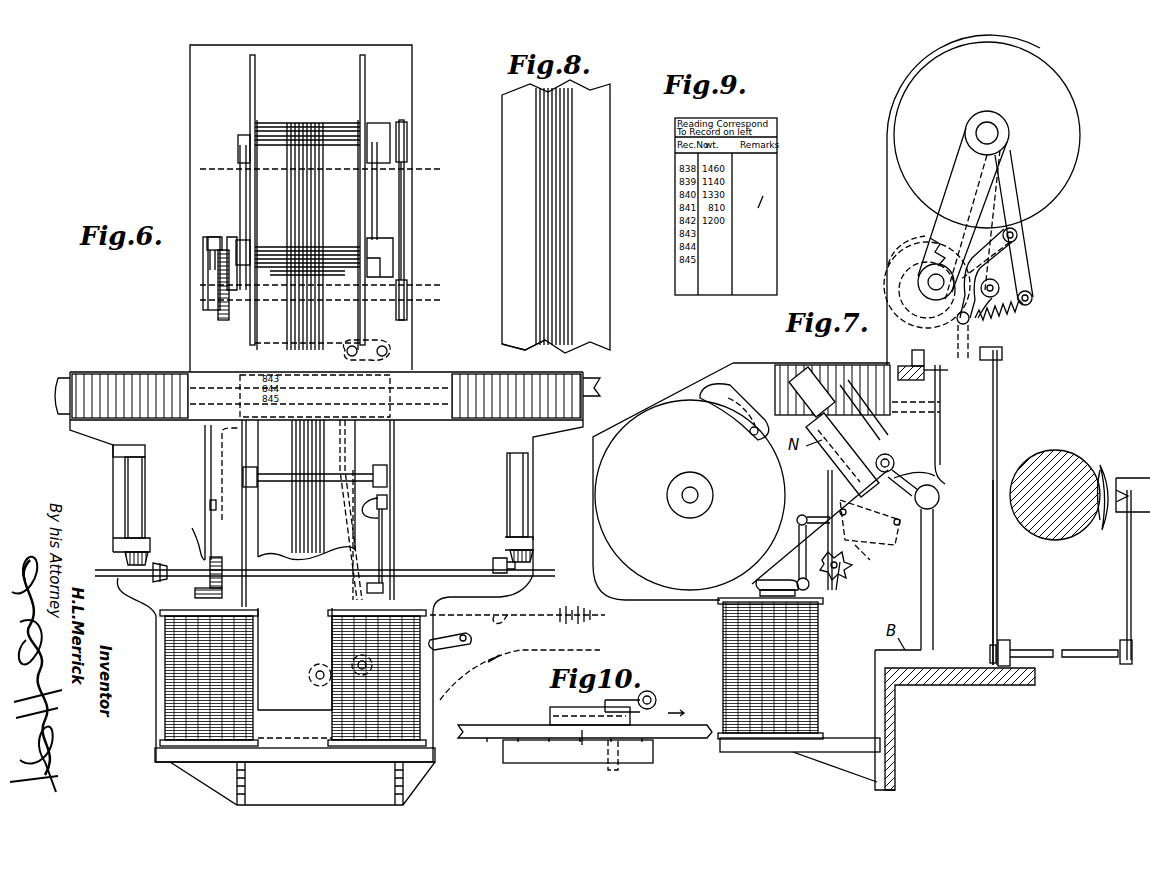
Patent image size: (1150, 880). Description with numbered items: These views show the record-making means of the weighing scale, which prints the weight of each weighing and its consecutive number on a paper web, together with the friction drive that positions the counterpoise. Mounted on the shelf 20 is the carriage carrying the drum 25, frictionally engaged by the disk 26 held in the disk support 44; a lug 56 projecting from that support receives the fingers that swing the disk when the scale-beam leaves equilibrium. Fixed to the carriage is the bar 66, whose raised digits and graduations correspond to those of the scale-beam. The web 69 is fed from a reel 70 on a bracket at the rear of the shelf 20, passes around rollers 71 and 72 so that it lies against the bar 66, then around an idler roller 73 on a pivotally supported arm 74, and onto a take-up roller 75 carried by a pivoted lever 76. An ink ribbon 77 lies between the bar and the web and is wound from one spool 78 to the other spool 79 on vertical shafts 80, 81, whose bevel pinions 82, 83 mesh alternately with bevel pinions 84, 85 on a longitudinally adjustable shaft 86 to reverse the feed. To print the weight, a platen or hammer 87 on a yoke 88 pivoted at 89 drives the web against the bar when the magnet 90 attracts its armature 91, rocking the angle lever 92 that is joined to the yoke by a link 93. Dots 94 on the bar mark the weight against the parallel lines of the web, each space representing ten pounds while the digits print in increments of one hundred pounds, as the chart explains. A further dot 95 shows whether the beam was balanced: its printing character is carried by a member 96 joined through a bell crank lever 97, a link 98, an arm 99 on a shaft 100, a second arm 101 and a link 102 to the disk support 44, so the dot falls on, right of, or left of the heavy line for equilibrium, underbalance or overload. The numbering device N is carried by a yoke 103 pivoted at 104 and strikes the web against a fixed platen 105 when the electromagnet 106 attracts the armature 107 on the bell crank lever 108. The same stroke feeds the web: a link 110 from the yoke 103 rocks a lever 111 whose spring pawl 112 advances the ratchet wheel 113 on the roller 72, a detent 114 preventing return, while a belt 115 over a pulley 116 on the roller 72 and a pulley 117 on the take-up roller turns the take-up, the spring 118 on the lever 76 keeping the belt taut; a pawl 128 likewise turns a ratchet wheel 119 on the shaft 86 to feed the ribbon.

In FIG. 7, the shelf 20 is at (935, 686).
In FIG. 7, the drum 25 is at (1040, 532).
In FIG. 7, the disk 26 is at (1100, 520).
In FIG. 7, the disk support 44 is at (1128, 478).
In FIG. 7, the lug 56 is at (1104, 472).
In FIG. 7, the bar 66 is at (885, 370).
In FIG. 10, the bar 66 is at (480, 738).
In FIG. 7, the web 69 is at (790, 540).
In FIG. 7, the reel 70 is at (690, 495).
In FIG. 7, the roller 71 is at (895, 463).
In FIG. 7, the roller 72 is at (893, 266).
In FIG. 7, the idler roller 73 is at (1000, 288).
In FIG. 7, the pivotally supported arm 74 is at (1010, 305).
In FIG. 7, the take-up roller 75 is at (987, 135).
In FIG. 6, the pivoted lever 76 is at (240, 186).
In FIG. 7, the pivoted lever 76 is at (1022, 258).
In FIG. 6, the ink ribbon 77 is at (425, 385).
In FIG. 6, the spool 78 is at (112, 374).
In FIG. 6, the spool 79 is at (555, 378).
In FIG. 8, the spool 79 is at (537, 353).
In FIG. 6, the shaft 80 is at (145, 490).
In FIG. 6, the shaft 81 is at (507, 480).
In FIG. 6, the bevel pinion 82 is at (148, 562).
In FIG. 6, the bevel pinion 83 is at (512, 552).
In FIG. 6, the bevel pinion 84 is at (165, 572).
In FIG. 6, the bevel pinion 85 is at (493, 565).
In FIG. 6, the longitudinally adjustable shaft 86 is at (418, 570).
In FIG. 7, the platen 87 is at (806, 378).
In FIG. 6, the yoke 88 is at (387, 456).
In FIG. 7, the yoke 88 is at (840, 468).
In FIG. 6, the pivotal support 89 is at (387, 500).
In FIG. 7, the pivotal support 89 is at (850, 566).
In FIG. 6, the magnet 90 is at (410, 688).
In FIG. 7, the magnet 90 is at (812, 672).
In FIG. 7, the armature 91 is at (766, 580).
In FIG. 7, the angle lever 92 is at (798, 566).
In FIG. 7, the link 93 is at (824, 518).
In FIG. 10, the dots 94 is at (516, 750).
In FIG. 8, the dot 95 is at (560, 162).
In FIG. 10, the dot 95 is at (568, 745).
In FIG. 7, the member 96 is at (918, 350).
In FIG. 10, the member 96 is at (578, 712).
In FIG. 7, the bell crank lever 97 is at (933, 378).
In FIG. 10, the bell crank lever 97 is at (650, 694).
In FIG. 6, the link 98 is at (352, 560).
In FIG. 7, the link 98 is at (990, 590).
In FIG. 10, the link 98 is at (622, 770).
In FIG. 6, the arm 99 is at (356, 662).
In FIG. 7, the arm 99 is at (990, 648).
In FIG. 6, the shaft 100 is at (316, 680).
In FIG. 7, the shaft 100 is at (1030, 650).
In FIG. 6, the arm 101 is at (468, 644).
In FIG. 7, the arm 101 is at (1120, 646).
In FIG. 7, the link 102 is at (1127, 585).
In FIG. 6, the yoke 103 is at (204, 446).
In FIG. 7, the yoke 103 is at (845, 430).
In FIG. 6, the pivotal support 104 is at (382, 521).
In FIG. 7, the pivotal support 104 is at (938, 480).
In FIG. 7, the fixed platen 105 is at (928, 410).
In FIG. 6, the electromagnet 106 is at (258, 720).
In FIG. 6, the armature 107 is at (195, 592).
In FIG. 6, the bell crank lever 108 is at (192, 530).
In FIG. 6, the link 110 is at (205, 312).
In FIG. 7, the link 110 is at (975, 428).
In FIG. 6, the lever 111 is at (203, 261).
In FIG. 7, the lever 111 is at (1000, 272).
In FIG. 6, the pawl 112 is at (212, 236).
In FIG. 7, the pawl 112 is at (935, 232).
In FIG. 7, the ratchet wheel 113 is at (905, 290).
In FIG. 7, the detent 114 is at (908, 246).
In FIG. 6, the belt 115 is at (404, 170).
In FIG. 7, the belt 115 is at (960, 160).
In FIG. 6, the pulley 116 is at (406, 285).
In FIG. 7, the pulley 116 is at (920, 271).
In FIG. 6, the pulley 117 is at (405, 130).
In FIG. 7, the pulley 117 is at (1000, 126).
In FIG. 7, the spring 118 is at (996, 316).
In FIG. 6, the ratchet wheel 119 is at (222, 556).
In FIG. 7, the ratchet wheel 119 is at (852, 580).
In FIG. 7, the pawl 128 is at (878, 530).